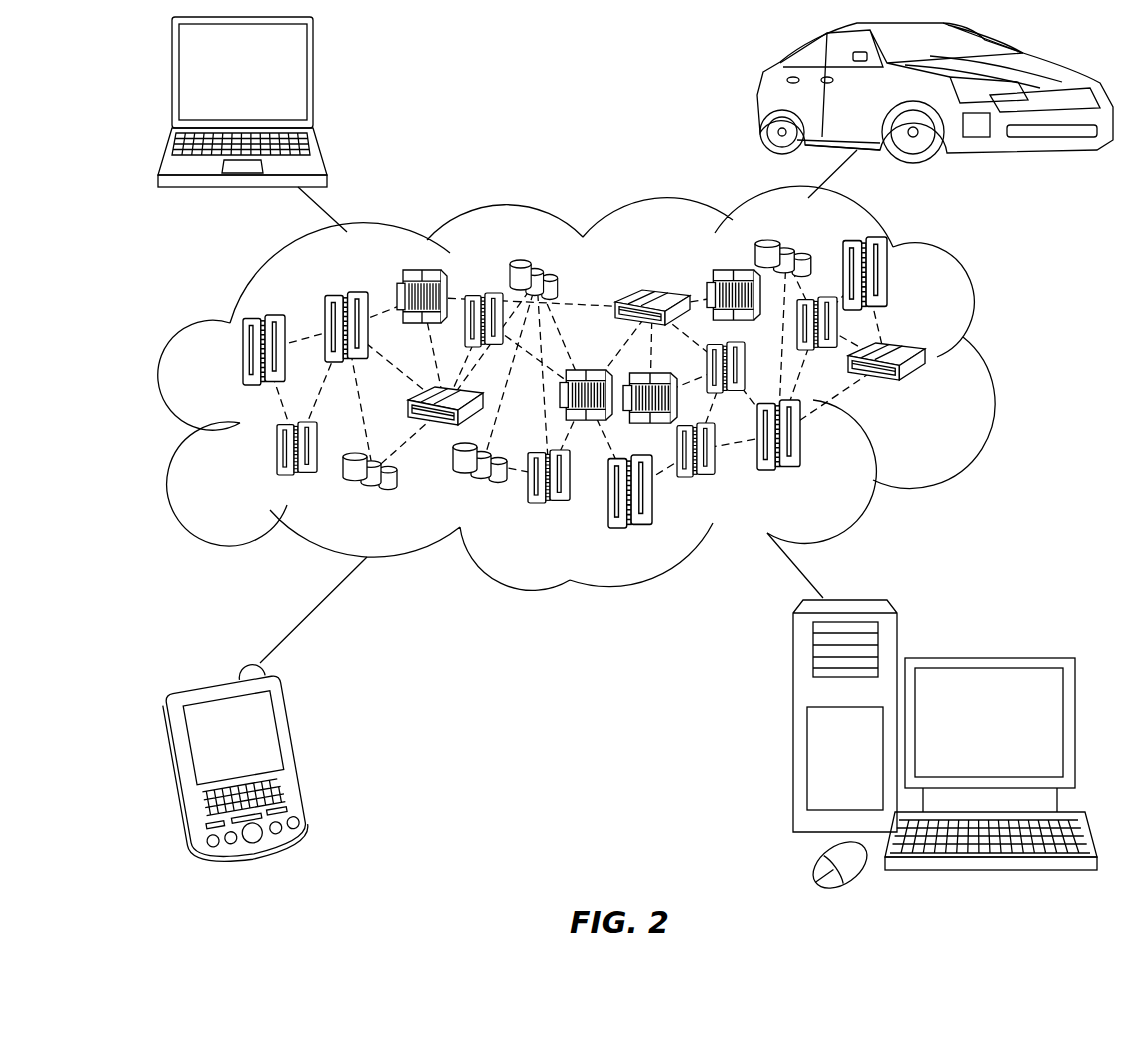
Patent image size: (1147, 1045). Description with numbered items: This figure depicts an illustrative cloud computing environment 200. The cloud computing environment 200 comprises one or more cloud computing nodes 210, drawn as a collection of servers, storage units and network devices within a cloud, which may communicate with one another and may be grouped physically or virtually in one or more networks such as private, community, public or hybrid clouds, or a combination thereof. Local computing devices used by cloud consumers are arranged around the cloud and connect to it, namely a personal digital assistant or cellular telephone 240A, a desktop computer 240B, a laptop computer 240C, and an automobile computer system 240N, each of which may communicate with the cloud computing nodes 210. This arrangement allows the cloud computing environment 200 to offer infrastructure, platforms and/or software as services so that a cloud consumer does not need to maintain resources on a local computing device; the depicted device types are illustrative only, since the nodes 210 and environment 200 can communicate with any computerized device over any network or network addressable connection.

The cloud computing environment 200 is at (987, 358).
The cloud computing node 210 is at (917, 373).
The personal digital assistant (PDA) or cellular telephone 240A is at (302, 755).
The desktop computer 240B is at (987, 655).
The laptop computer 240C is at (313, 82).
The automobile computer system 240N is at (762, 97).